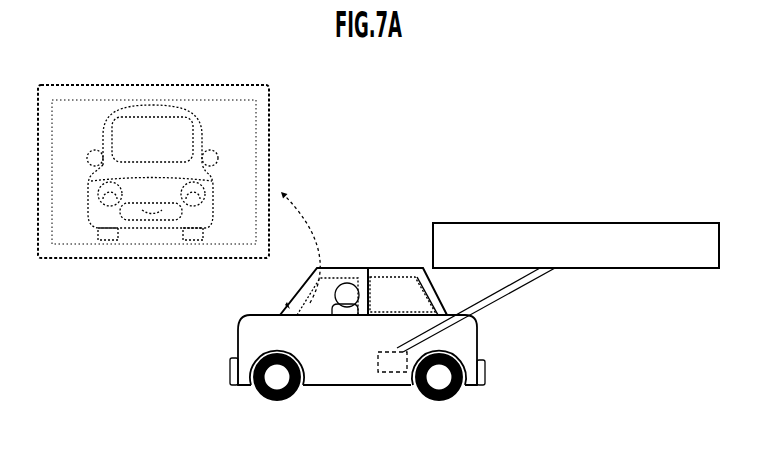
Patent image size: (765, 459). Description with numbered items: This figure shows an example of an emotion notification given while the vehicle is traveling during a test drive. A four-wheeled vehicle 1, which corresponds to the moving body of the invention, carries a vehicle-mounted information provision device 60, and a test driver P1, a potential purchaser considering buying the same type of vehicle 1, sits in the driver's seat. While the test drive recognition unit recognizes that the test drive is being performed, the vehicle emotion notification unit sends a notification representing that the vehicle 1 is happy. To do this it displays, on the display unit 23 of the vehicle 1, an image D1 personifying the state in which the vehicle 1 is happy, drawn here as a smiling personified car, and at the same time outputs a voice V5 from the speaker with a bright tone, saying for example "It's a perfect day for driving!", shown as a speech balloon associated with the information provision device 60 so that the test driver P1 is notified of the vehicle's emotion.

The vehicle 1 is at (383, 267).
The display unit 23 is at (270, 149).
The image D1 is at (215, 112).
The test driver P1 is at (348, 285).
The information provision device 60 is at (390, 374).
The voice V5 is at (537, 223).